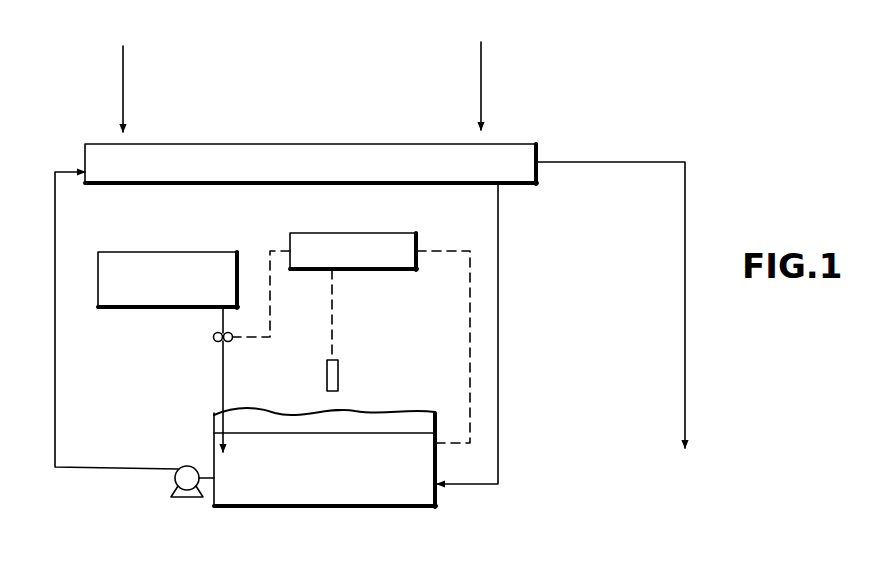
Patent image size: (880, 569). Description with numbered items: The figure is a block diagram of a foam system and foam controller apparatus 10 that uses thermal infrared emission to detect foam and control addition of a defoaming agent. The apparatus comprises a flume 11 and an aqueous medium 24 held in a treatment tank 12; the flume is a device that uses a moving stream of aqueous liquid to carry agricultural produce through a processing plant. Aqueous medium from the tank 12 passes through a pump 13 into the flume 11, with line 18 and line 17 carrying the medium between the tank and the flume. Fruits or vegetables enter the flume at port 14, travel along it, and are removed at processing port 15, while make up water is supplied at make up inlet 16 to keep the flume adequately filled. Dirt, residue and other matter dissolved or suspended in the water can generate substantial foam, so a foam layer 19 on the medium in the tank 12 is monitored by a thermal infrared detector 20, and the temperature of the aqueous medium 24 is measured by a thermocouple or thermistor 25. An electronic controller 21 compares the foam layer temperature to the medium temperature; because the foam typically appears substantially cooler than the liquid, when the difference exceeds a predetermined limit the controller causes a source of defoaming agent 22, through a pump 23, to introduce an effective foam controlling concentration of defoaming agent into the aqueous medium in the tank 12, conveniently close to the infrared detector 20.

The foam system and foam controller apparatus 10 is at (654, 56).
The flume 11 is at (295, 143).
The treatment tank 12 is at (434, 506).
The pump 13 is at (174, 496).
The port 14 is at (124, 75).
The processing port 15 is at (619, 320).
The make up inlet 16 is at (481, 73).
The line 17 is at (499, 386).
The line 18 is at (55, 382).
The foam layer 19 is at (418, 411).
The thermal infrared detector 20 is at (339, 372).
The electronic controller 21 is at (399, 240).
The source of defoaming agent 22 is at (173, 252).
The pump 23 is at (212, 339).
The aqueous medium 24 is at (323, 494).
The thermocouple or thermistor 25 is at (438, 448).